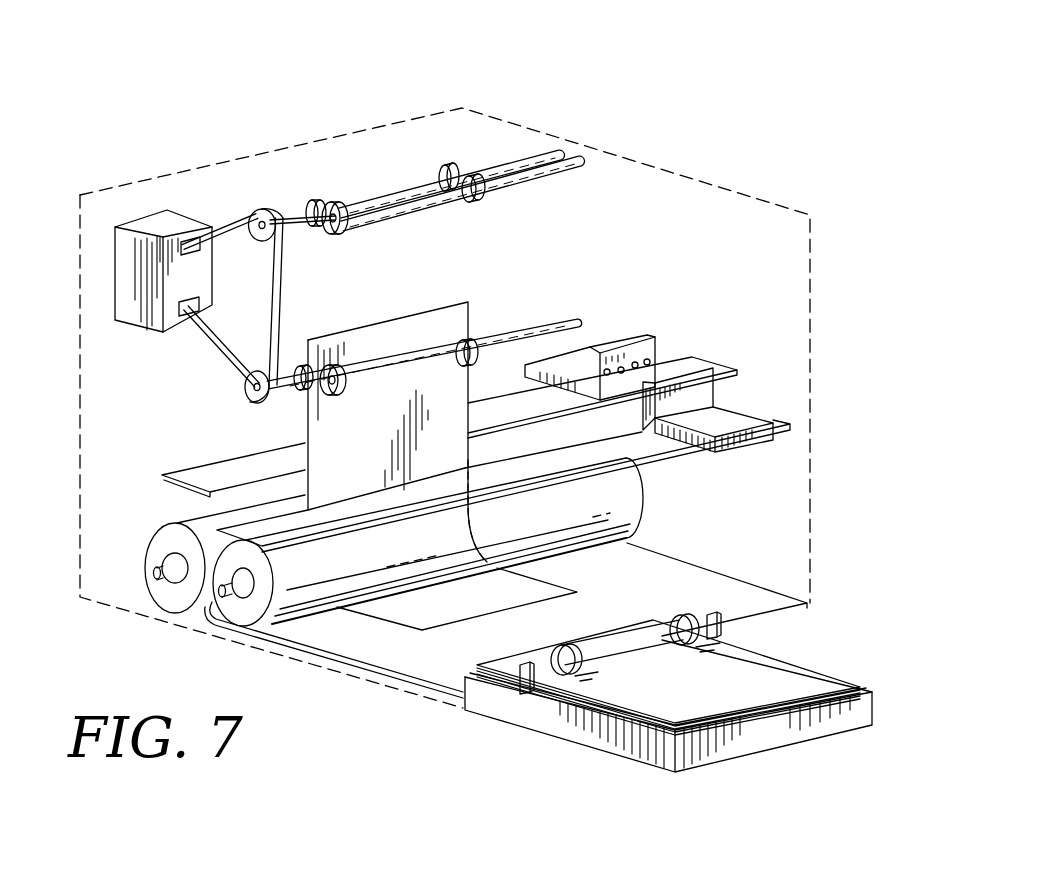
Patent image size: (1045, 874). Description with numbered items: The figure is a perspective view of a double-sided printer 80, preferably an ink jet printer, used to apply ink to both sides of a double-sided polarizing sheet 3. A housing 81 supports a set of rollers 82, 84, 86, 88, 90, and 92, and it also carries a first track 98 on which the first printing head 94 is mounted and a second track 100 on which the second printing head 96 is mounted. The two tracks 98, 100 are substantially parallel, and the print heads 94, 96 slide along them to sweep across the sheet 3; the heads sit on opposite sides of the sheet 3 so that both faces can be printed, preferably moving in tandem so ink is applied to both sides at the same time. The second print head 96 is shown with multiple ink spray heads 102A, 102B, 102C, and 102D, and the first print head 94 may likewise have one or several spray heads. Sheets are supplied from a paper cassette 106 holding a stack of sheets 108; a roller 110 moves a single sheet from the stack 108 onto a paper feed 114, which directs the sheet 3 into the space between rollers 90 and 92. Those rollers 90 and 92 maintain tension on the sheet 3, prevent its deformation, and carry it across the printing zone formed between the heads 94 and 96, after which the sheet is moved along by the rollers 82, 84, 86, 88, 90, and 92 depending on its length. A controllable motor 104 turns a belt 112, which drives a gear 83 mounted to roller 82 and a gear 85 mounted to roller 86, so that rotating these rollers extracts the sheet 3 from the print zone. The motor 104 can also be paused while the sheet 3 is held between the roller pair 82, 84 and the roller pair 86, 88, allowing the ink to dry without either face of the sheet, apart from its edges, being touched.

The double-sided polarizing sheet 3 is at (380, 449).
The double-sided printer 80 is at (373, 103).
The housing 81 is at (462, 108).
The roller 82 is at (382, 192).
The gear 83 is at (266, 209).
The roller 84 is at (423, 201).
The gear 85 is at (256, 374).
The roller 86 is at (528, 330).
The roller 88 is at (398, 362).
The roller 90 is at (152, 535).
The roller 92 is at (556, 520).
The first printing head 94 is at (705, 393).
The second printing head 96 is at (660, 365).
The first track 98 is at (673, 452).
The second track 100 is at (250, 460).
The ink spray head 102A is at (607, 369).
The ink spray head 102B is at (621, 367).
The ink spray head 102C is at (636, 362).
The ink spray head 102D is at (648, 359).
The motor 104 is at (210, 289).
The paper cassette 106 is at (560, 725).
The stack of sheets 108 is at (692, 684).
The roller 110 is at (684, 616).
The belt 112 is at (236, 218).
The paper feed 114 is at (333, 662).